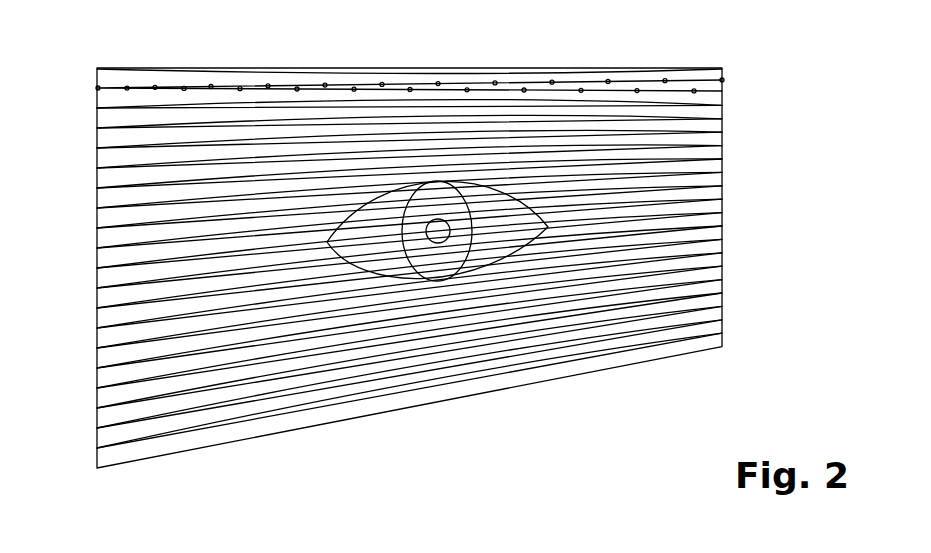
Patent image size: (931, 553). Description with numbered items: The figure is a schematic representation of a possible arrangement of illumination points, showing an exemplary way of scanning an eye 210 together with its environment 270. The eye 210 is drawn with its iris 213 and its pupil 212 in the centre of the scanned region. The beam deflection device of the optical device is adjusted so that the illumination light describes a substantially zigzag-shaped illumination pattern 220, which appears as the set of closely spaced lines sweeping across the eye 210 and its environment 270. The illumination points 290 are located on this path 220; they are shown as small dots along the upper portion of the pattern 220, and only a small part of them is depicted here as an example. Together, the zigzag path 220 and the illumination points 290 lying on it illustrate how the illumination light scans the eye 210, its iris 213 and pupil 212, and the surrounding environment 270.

The eye 210 is at (540, 242).
The pupil 212 is at (438, 232).
The iris 213 is at (423, 256).
The illumination pattern 220 is at (346, 83).
The environment 270 is at (723, 91).
The illumination points 290 is at (466, 91).